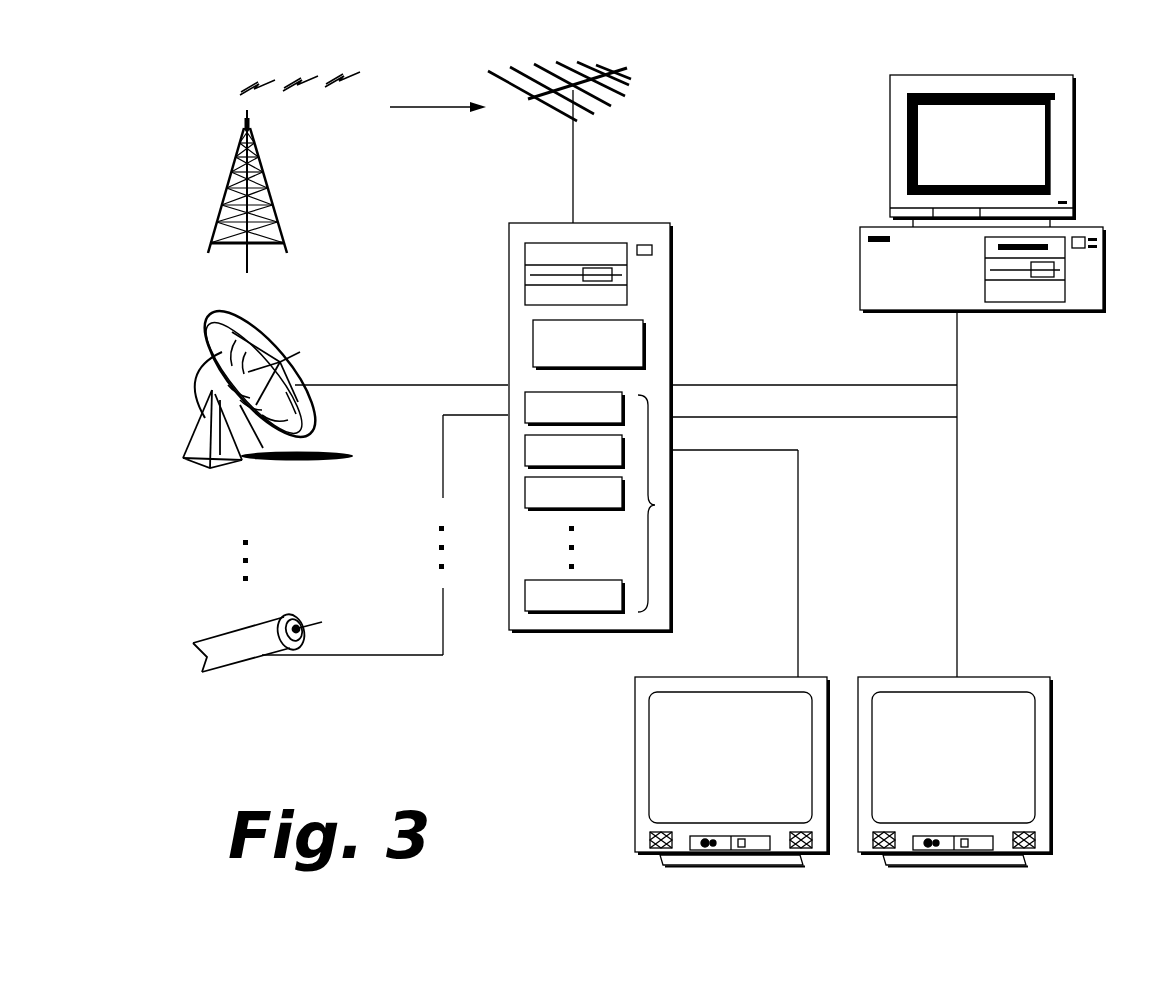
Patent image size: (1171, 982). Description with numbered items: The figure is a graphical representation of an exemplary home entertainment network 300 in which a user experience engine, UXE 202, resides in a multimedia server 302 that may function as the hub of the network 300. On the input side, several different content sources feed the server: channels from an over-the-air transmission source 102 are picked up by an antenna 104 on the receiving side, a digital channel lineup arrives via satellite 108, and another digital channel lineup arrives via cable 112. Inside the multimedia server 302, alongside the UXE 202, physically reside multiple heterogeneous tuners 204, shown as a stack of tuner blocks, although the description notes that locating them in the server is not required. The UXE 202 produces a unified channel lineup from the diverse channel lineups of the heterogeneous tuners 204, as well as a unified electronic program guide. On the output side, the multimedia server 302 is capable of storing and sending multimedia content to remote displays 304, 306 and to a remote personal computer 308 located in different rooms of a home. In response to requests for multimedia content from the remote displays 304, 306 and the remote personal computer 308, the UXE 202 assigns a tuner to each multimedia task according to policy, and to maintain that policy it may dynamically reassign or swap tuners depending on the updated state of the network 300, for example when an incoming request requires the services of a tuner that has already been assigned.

The home entertainment network 300 is at (792, 46).
The over-the-air transmission source 102 is at (272, 222).
The antenna 104 is at (608, 74).
The satellite 108 is at (268, 344).
The cable 112 is at (262, 655).
The multimedia server 302 is at (672, 255).
The user experience engine (UXE) 202 is at (645, 340).
The heterogeneous tuners 204 is at (645, 578).
The remote personal computer 308 is at (1076, 140).
The remote display 304 is at (670, 677).
The remote display 306 is at (980, 677).